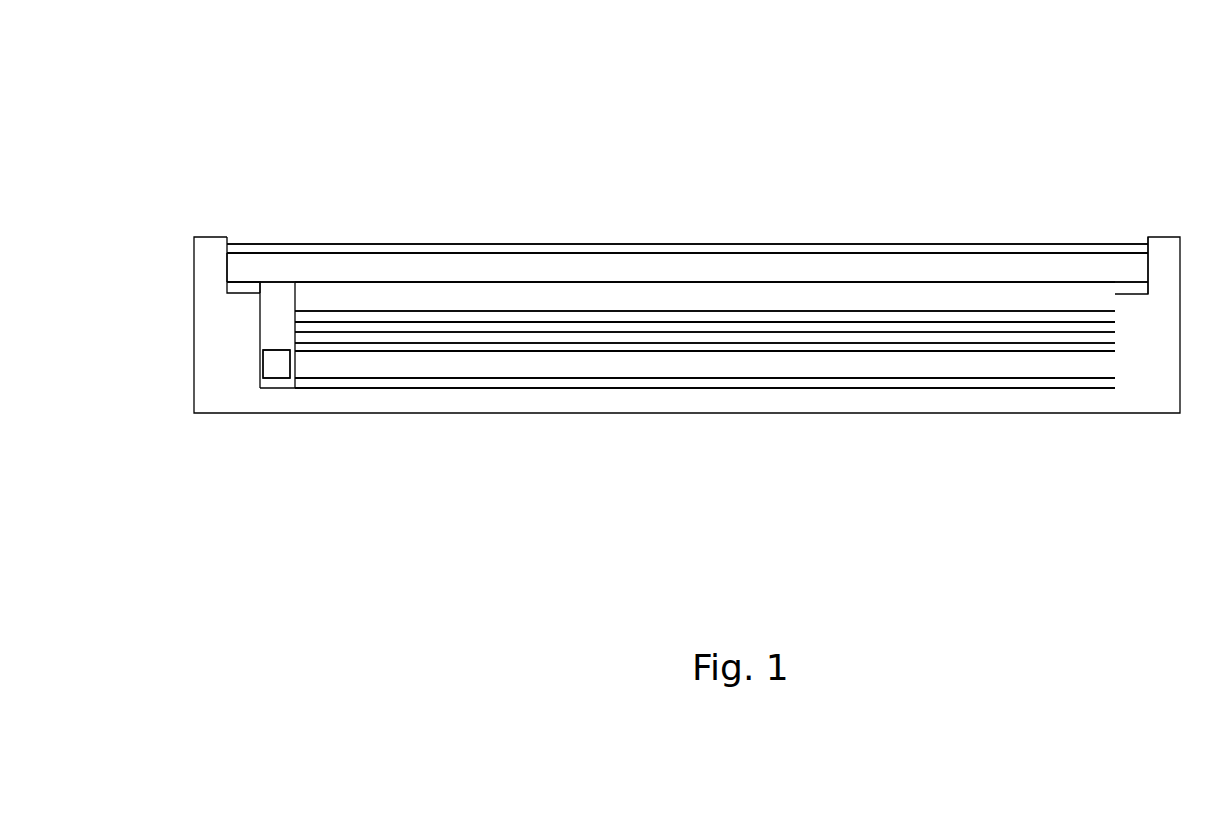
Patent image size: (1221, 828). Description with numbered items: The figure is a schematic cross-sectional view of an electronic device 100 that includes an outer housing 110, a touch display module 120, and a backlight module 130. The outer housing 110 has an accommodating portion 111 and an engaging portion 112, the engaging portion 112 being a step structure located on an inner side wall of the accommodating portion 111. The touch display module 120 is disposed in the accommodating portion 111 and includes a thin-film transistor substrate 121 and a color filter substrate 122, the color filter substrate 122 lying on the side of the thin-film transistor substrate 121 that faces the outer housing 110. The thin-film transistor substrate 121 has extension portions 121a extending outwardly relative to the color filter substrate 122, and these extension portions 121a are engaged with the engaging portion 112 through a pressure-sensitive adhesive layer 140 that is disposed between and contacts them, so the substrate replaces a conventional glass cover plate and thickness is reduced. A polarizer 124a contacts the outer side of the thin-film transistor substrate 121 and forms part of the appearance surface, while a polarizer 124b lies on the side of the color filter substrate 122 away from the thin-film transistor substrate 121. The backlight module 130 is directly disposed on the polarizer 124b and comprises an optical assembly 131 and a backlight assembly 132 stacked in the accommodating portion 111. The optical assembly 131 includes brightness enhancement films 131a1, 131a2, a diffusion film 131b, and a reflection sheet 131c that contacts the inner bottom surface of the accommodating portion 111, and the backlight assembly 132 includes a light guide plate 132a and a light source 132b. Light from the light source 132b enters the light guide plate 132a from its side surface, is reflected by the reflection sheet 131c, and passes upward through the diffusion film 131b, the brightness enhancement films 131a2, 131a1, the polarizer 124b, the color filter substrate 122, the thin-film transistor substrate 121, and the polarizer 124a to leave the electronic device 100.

The electronic device 100 is at (203, 79).
The outer housing 110 is at (210, 247).
The accommodating portion 111 is at (250, 332).
The engaging portion 112 is at (226, 305).
The touch display module 120 is at (1000, 207).
The thin-film transistor substrate 121 is at (758, 262).
The extension portions 121a is at (230, 263).
The color filter substrate 122 is at (700, 290).
The polarizer 124a is at (841, 248).
The polarizer 124b is at (632, 317).
The backlight module 130 is at (675, 508).
The optical assembly 131 is at (795, 458).
The brightness enhancement film 131a1 is at (750, 330).
The brightness enhancement film 131a2 is at (657, 337).
The diffusion film 131b is at (587, 345).
The reflection sheet 131c is at (522, 383).
The backlight assembly 132 is at (468, 457).
The light guide plate 132a is at (423, 360).
The light source 132b is at (280, 370).
The pressure-sensitive adhesive layer 140 is at (226, 287).